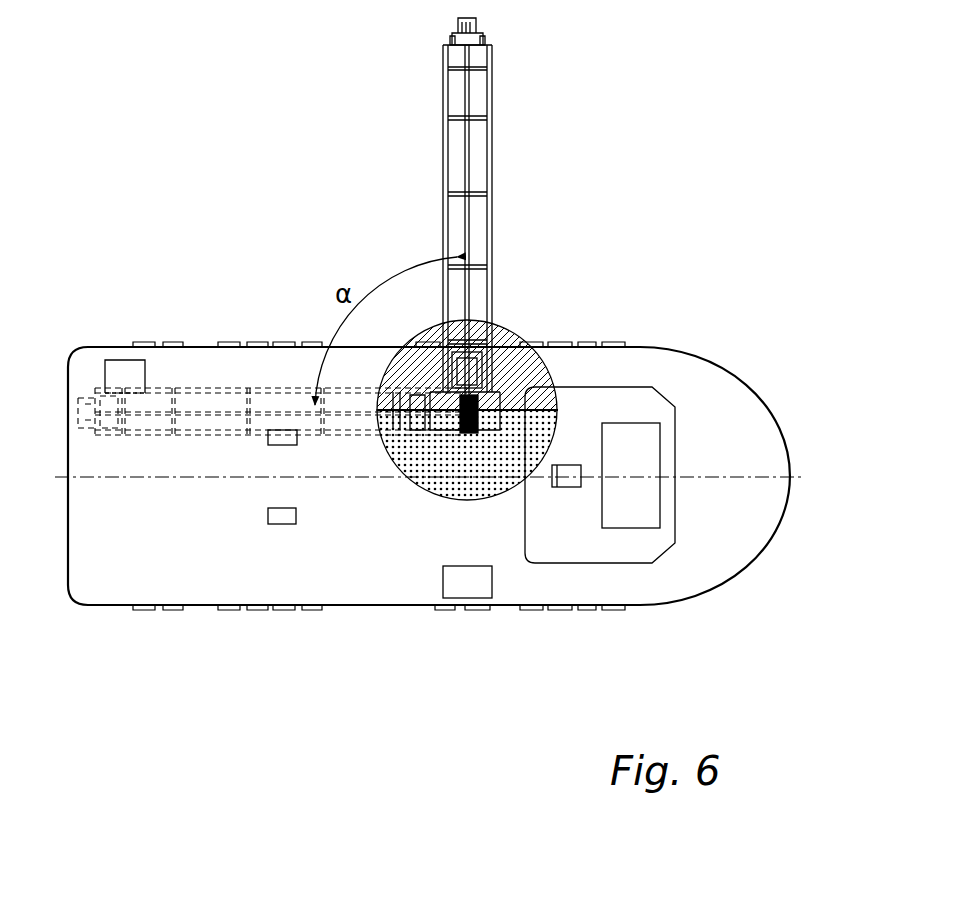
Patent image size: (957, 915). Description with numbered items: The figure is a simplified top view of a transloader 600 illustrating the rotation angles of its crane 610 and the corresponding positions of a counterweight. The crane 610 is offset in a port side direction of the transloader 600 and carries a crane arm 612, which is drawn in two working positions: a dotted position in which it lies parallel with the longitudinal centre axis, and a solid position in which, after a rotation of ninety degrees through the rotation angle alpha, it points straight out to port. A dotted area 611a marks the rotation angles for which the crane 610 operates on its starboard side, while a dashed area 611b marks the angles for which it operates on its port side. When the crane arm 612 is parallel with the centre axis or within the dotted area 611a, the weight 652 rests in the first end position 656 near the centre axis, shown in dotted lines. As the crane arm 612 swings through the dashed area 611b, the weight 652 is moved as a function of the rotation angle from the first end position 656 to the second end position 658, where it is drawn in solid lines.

The transloader 600 is at (650, 320).
The crane 610 is at (520, 171).
The crane arm 612 is at (492, 133).
The dotted area 611a is at (513, 452).
The dashed area 611b is at (497, 338).
The first end position 656 is at (438, 469).
The second end position 658 is at (432, 578).
The weight 652 is at (467, 587).